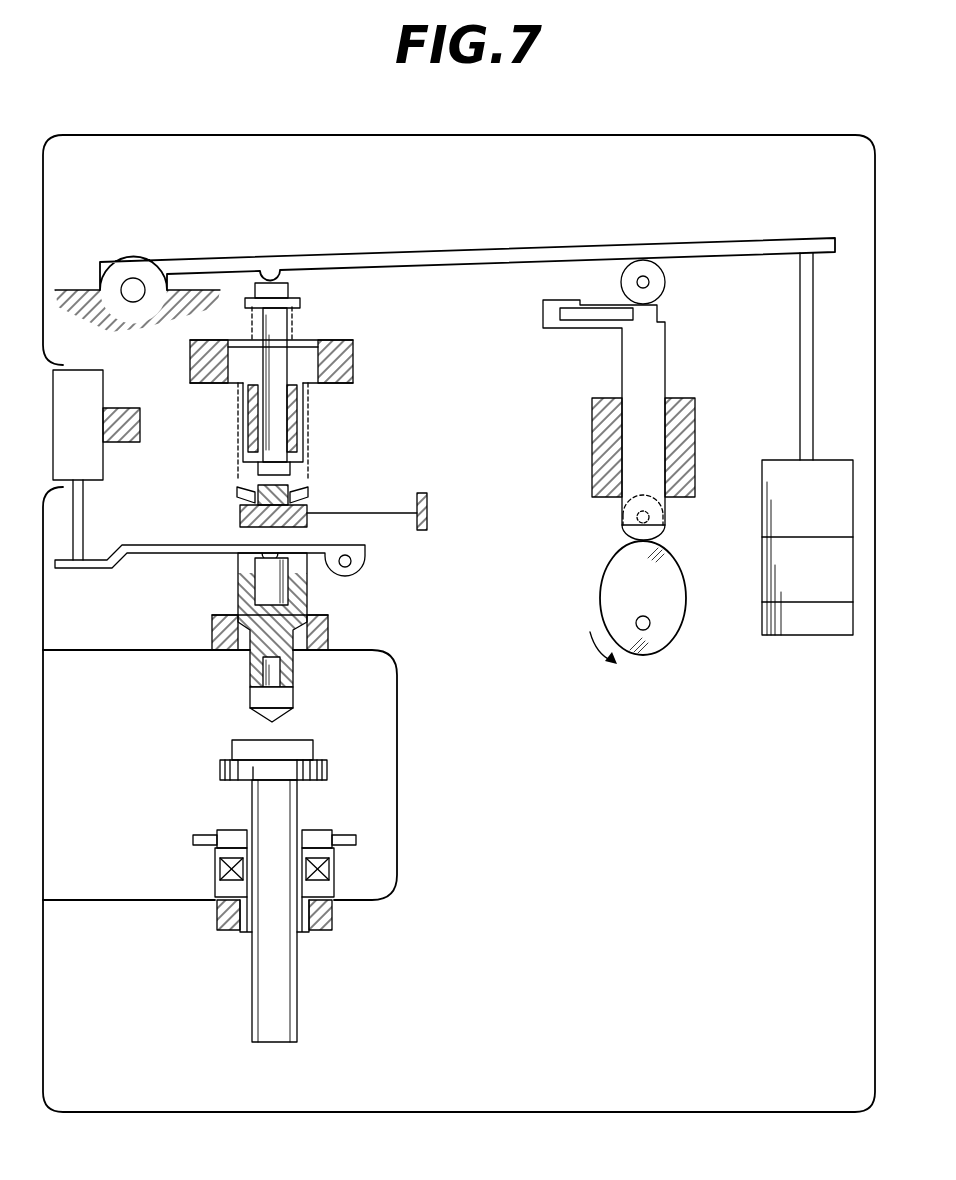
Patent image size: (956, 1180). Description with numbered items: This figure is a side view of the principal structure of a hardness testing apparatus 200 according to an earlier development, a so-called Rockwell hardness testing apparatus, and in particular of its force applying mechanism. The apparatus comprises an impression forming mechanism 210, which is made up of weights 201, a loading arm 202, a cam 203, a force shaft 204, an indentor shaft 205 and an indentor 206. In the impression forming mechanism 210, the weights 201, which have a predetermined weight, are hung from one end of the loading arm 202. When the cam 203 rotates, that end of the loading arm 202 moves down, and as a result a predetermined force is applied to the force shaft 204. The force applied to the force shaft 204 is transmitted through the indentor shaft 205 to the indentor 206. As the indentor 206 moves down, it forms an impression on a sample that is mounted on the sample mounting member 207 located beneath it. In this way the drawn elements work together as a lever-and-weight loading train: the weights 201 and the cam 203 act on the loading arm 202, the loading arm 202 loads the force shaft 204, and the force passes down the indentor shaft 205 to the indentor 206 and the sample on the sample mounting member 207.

The hardness testing apparatus 200 is at (203, 37).
The impression forming mechanism 210 is at (323, 244).
The loading arm 202 is at (706, 247).
The force shaft 204 is at (281, 322).
The indentor shaft 205 is at (265, 590).
The indentor 206 is at (250, 677).
The sample mounting member 207 is at (230, 752).
The cam 203 is at (670, 632).
The weights 201 is at (818, 588).